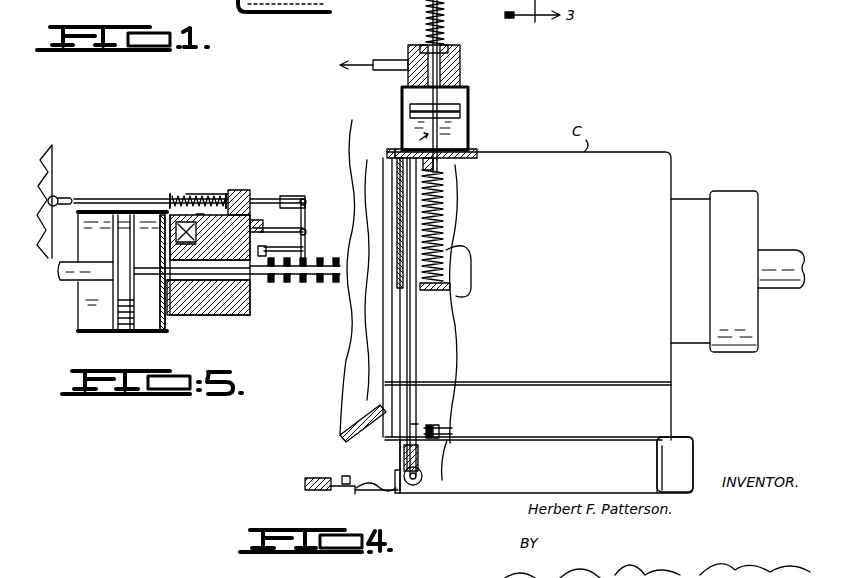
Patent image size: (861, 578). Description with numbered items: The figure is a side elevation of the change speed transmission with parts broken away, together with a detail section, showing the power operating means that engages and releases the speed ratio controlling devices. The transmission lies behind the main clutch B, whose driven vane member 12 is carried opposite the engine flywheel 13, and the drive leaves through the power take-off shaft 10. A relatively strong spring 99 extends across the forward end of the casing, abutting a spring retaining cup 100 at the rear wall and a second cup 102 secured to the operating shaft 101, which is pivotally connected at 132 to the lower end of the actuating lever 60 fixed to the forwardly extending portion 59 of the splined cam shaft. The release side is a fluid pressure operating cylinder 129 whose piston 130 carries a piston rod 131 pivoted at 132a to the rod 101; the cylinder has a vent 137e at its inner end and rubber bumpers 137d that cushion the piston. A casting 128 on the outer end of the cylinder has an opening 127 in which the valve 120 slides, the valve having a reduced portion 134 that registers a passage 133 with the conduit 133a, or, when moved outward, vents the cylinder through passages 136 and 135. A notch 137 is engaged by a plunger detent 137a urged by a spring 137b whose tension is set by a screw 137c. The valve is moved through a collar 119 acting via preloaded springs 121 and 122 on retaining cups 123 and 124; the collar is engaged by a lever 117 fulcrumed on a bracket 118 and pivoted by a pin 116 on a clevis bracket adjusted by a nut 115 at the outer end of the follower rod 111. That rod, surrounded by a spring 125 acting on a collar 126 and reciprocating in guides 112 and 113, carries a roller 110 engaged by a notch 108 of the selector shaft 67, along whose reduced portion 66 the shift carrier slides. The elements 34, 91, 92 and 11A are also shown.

In FIG. 4, the power take-off shaft 10 is at (800, 250).
In FIG. 4, the driven vane member 12 is at (278, 12).
In FIG. 4, the engine flywheel 13 is at (246, 12).
In FIG. 5, the block 34 is at (190, 284).
In FIG. 4, the forwardly extending portion 59 is at (446, 470).
In FIG. 4, the actuating lever 60 is at (440, 428).
In FIG. 4, the reduced portion 66 is at (694, 480).
In FIG. 4, the shaft 67 is at (404, 486).
In FIG. 5, the shaft 67 is at (50, 150).
In FIG. 4, the cylinder 91 is at (316, 478).
In FIG. 4, the pin 92 is at (348, 476).
In FIG. 4, the spring 99 is at (446, 210).
In FIG. 4, the spring retaining cup 100 is at (468, 170).
In FIG. 4, the operating shaft 101 is at (458, 352).
In FIG. 4, the second cup 102 is at (466, 298).
In FIG. 4, the notch 108 is at (376, 484).
In FIG. 5, the roller 110 is at (55, 198).
In FIG. 4, the follower rod 111 is at (412, 424).
In FIG. 5, the follower rod 111 is at (126, 198).
In FIG. 4, the guide 112 is at (426, 482).
In FIG. 5, the guide 113 is at (240, 190).
In FIG. 5, the nut 115 is at (284, 196).
In FIG. 5, the pivot 11A is at (302, 196).
In FIG. 5, the pin 116 is at (306, 202).
In FIG. 5, the lever 117 is at (306, 218).
In FIG. 5, the bracket 118 is at (298, 228).
In FIG. 5, the collar 119 is at (306, 252).
In FIG. 4, the valve 120 is at (440, 42).
In FIG. 5, the valve 120 is at (238, 306).
In FIG. 5, the preloaded spring 121 is at (284, 282).
In FIG. 5, the preloaded spring 122 is at (322, 282).
In FIG. 5, the retaining cup 123 is at (262, 258).
In FIG. 5, the retaining cup 124 is at (340, 300).
In FIG. 5, the spring 125 is at (188, 194).
In FIG. 5, the collar 126 is at (174, 197).
In FIG. 4, the opening 127 is at (462, 108).
In FIG. 5, the opening 127 is at (178, 316).
In FIG. 5, the casting 128 is at (220, 316).
In FIG. 5, the fluid pressure operating cylinder 129 is at (76, 330).
In FIG. 4, the piston 130 is at (462, 118).
In FIG. 5, the piston 130 is at (122, 330).
In FIG. 5, the piston rod 131 is at (74, 290).
In FIG. 4, the pivotal connection 132 is at (447, 414).
In FIG. 4, the pivotal connection 132a is at (450, 174).
In FIG. 4, the passage 133 is at (468, 98).
In FIG. 4, the conduit 133a is at (390, 60).
In FIG. 4, the reduced portion 134 is at (462, 76).
In FIG. 4, the passage 135 is at (408, 46).
In FIG. 4, the passage 136 is at (452, 51).
In FIG. 5, the notch 137 is at (140, 330).
In FIG. 5, the plunger detent 137a is at (140, 235).
In FIG. 5, the spring 137b is at (196, 226).
In FIG. 5, the screw 137c is at (198, 214).
In FIG. 5, the rubber bumpers 137d is at (190, 244).
In FIG. 4, the vent 137e is at (462, 140).
In FIG. 4, the main clutch B is at (335, 382).